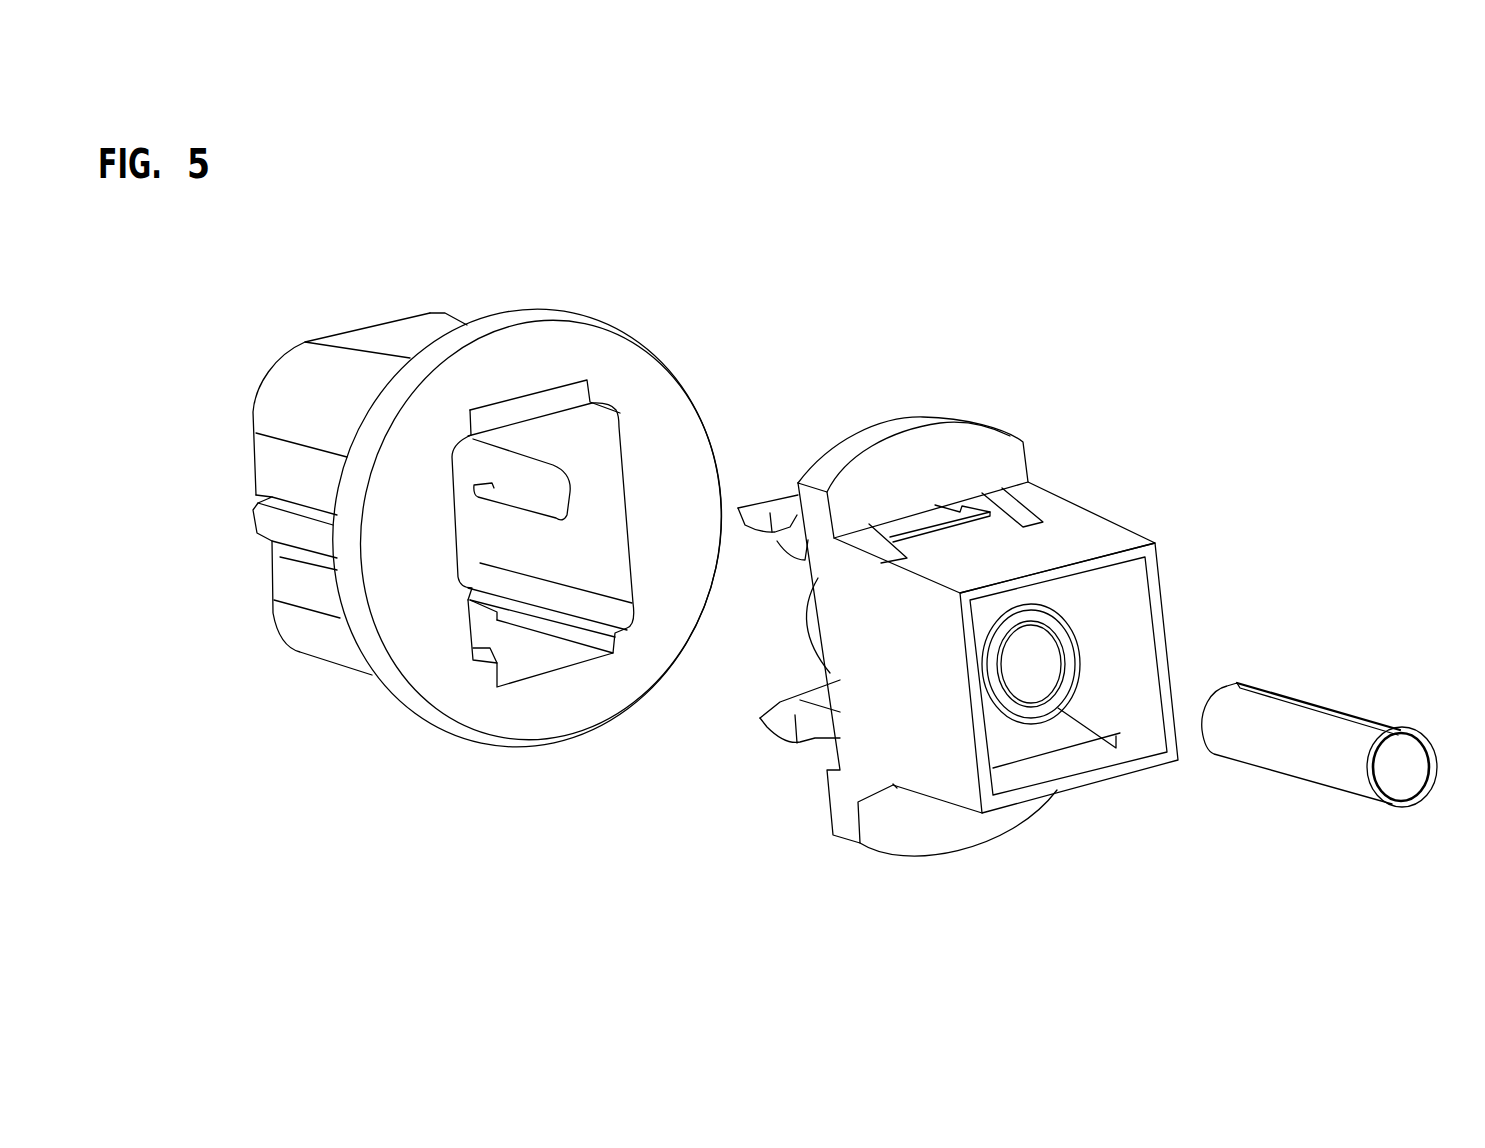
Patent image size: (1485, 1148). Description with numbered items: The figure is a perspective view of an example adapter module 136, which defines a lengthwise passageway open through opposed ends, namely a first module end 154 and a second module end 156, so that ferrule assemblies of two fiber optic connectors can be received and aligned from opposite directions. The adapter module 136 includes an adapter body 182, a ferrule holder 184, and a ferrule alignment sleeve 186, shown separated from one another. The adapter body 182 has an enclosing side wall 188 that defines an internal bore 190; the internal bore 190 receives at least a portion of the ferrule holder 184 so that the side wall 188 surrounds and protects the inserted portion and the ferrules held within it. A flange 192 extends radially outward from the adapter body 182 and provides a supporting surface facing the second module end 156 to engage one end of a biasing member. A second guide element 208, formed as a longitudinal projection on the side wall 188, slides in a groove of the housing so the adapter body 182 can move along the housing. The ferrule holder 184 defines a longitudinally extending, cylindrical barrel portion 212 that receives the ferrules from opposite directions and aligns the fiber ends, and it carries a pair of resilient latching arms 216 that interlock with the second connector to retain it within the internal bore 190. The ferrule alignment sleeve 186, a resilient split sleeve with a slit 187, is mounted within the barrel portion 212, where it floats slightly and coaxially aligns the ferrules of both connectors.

The adapter module 136 is at (1054, 235).
The first module end 154 is at (1173, 478).
The second module end 156 is at (282, 308).
The adapter body 182 is at (523, 246).
The ferrule holder 184 is at (1034, 384).
The ferrule alignment sleeve 186 is at (1357, 655).
The slit 187 is at (1400, 732).
The enclosing side wall 188 is at (273, 402).
The internal bore 190 is at (536, 560).
The flange 192 is at (500, 323).
The second guide element 208 is at (280, 530).
The barrel portion 212 is at (1042, 660).
The pair of latching arms 216 is at (780, 540).